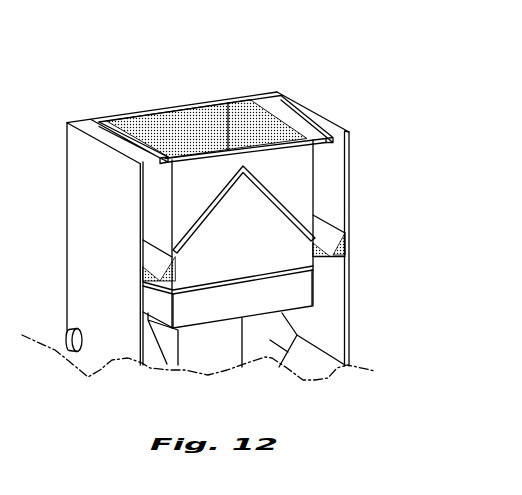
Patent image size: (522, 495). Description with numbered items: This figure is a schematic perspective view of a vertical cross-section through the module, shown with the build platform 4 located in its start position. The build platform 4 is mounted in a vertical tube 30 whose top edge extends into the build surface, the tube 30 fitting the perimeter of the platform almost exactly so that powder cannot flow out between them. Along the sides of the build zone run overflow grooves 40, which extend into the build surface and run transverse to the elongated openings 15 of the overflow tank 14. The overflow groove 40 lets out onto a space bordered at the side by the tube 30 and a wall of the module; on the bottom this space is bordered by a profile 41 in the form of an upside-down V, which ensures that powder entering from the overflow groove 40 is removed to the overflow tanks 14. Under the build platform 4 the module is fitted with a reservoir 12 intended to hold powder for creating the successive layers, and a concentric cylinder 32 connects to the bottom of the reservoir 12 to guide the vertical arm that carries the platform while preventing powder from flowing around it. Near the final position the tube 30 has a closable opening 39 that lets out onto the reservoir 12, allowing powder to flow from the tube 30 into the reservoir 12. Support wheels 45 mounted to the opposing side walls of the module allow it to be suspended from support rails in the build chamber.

The build platform 4 is at (213, 120).
The reservoir 12 is at (302, 323).
The overflow tank 14 is at (325, 212).
The opening 15 is at (113, 133).
The vertical tube 30 is at (229, 98).
The concentric cylinder 32 is at (197, 342).
The closable opening 39 is at (250, 280).
The overflow groove 40 is at (157, 110).
The profile 41 is at (275, 180).
The support wheel 45 is at (67, 343).